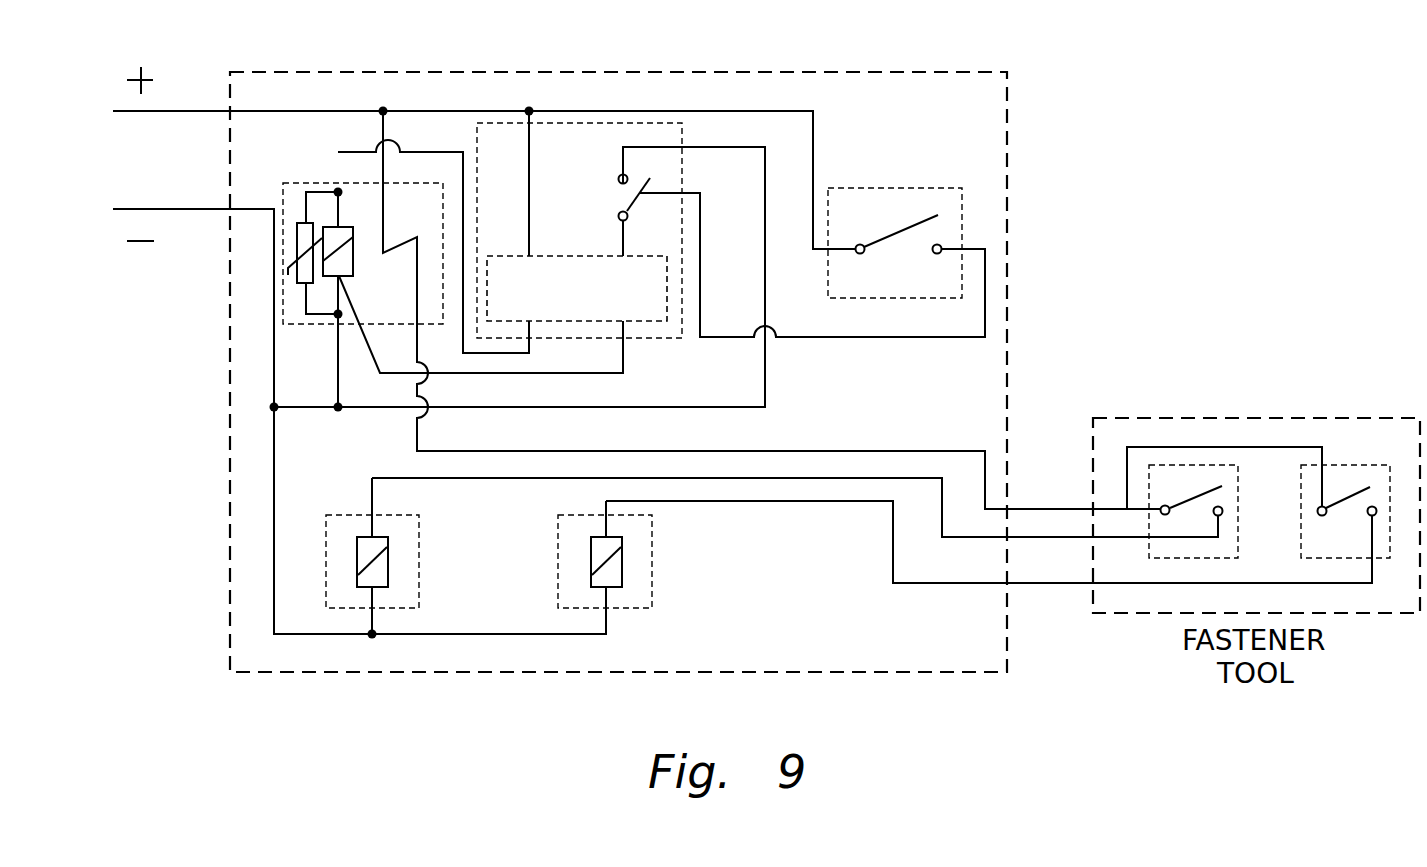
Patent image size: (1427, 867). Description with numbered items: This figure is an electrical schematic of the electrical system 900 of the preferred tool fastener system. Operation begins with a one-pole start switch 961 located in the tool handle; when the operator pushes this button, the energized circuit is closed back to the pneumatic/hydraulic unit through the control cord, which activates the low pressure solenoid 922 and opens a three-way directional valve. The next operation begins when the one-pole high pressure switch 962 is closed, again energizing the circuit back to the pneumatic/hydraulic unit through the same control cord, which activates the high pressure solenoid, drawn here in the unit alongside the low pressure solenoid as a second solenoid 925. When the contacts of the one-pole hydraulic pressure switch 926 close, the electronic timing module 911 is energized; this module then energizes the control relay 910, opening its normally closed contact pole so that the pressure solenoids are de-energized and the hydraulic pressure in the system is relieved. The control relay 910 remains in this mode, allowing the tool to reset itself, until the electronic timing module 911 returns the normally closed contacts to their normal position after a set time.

The electrical system 900 is at (947, 712).
The control relay 910 is at (417, 182).
The electronic timing module 911 is at (580, 123).
The low pressure solenoid 922 is at (419, 562).
The solenoid valve 925 is at (652, 562).
The pressure switch 926 is at (893, 188).
The start switch 961 is at (1200, 465).
The high pressure switch 962 is at (1368, 465).